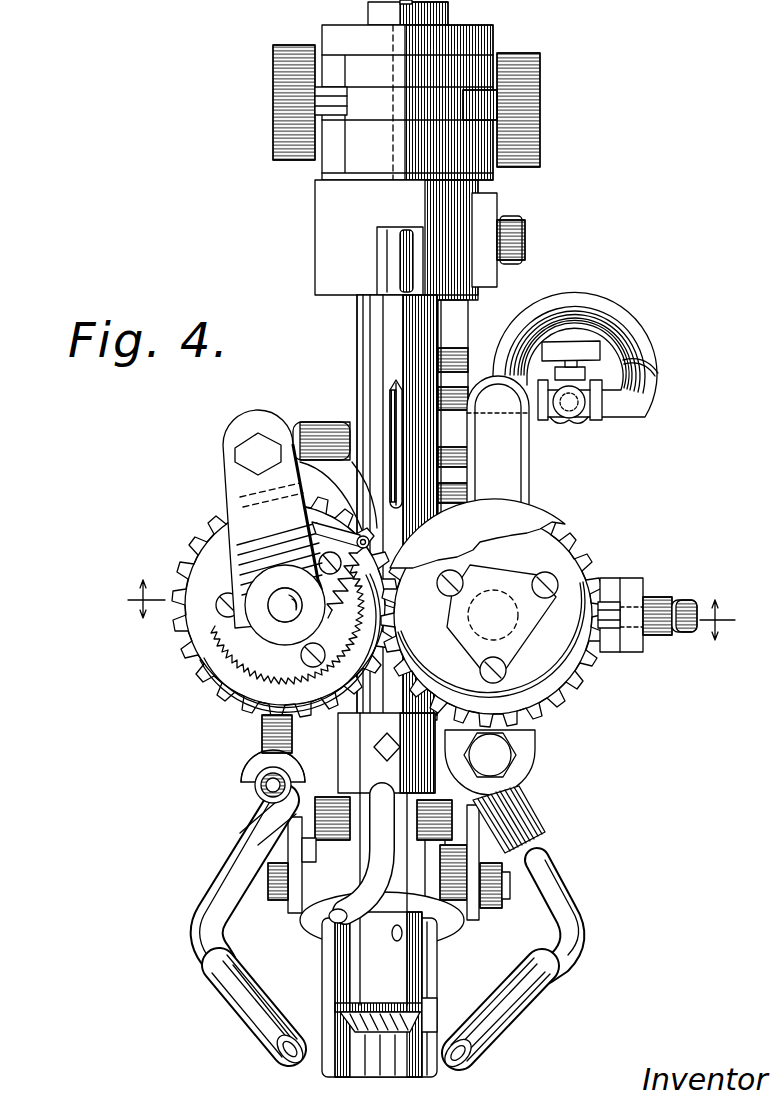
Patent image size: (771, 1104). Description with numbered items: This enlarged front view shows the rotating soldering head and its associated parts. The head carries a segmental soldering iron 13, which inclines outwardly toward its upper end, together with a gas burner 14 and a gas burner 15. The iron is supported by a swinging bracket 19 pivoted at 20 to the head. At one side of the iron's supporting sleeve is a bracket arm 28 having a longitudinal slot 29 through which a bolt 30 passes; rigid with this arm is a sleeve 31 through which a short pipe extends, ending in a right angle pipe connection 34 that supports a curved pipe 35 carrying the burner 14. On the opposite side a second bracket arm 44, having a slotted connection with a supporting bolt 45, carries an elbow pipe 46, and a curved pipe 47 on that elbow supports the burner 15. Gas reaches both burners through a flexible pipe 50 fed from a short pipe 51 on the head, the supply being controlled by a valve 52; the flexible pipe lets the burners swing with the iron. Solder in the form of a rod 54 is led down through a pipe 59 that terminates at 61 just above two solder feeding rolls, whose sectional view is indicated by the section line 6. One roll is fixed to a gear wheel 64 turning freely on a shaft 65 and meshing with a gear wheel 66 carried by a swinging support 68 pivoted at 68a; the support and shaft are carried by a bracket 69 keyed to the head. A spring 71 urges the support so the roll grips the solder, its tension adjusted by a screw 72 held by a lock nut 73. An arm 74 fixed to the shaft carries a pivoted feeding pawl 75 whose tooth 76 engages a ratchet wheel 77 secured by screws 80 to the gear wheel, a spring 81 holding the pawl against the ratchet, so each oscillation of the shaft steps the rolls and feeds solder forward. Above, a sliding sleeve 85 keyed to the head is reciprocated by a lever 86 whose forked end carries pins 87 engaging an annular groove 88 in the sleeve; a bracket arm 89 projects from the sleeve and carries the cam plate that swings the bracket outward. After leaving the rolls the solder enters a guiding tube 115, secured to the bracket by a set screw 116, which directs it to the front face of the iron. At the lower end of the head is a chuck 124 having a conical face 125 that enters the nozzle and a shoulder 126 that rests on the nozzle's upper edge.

The section line 6- 6 is at (433, 610).
The soldering iron 13 is at (385, 1068).
The gas burner 14 is at (258, 1012).
The gas burner 15 is at (528, 997).
The swinging bracket 19 is at (300, 823).
The pivotal support 20 is at (333, 809).
The bracket arm 28 is at (293, 844).
The longitudinal slot 29 is at (330, 918).
The bolt 30 is at (277, 898).
The sleeve 31 is at (258, 772).
The right angle pipe connection 34 is at (266, 786).
The curved pipe 35 is at (205, 893).
The second bracket arm 44 is at (472, 846).
The supporting bolt 45 is at (503, 882).
The elbow pipe 46 is at (532, 798).
The curved pipe 47 is at (570, 908).
The flexible pipe 50 is at (588, 296).
The short pipe 51 is at (462, 392).
The valve 52 is at (577, 418).
The solder rod 54 is at (493, 613).
The pipe 59 is at (398, 437).
The lower end of pipe 61 is at (430, 506).
The gear wheel 64 is at (207, 555).
The shaft 65 is at (262, 622).
The gear wheel 66 is at (553, 550).
The swinging support 68 is at (498, 444).
The pivot 68a is at (496, 742).
The bracket 69 is at (598, 582).
The spring 71 is at (612, 610).
The screw 72 is at (684, 606).
The lock nut 73 is at (656, 599).
The arm 74 is at (240, 498).
The feeding pawl 75 is at (300, 472).
The tooth 76 is at (312, 527).
The ratchet wheel 77 is at (280, 611).
The screws 80 is at (330, 625).
The spring 81 is at (306, 538).
The sliding sleeve 85 is at (330, 231).
The lever 86 is at (272, 112).
The projecting pins 87 is at (333, 103).
The annular groove 88 is at (440, 125).
The bracket arm 89 is at (490, 210).
The guiding tube 115 is at (440, 800).
The set screw 116 is at (386, 754).
The chuck 124 is at (414, 1006).
The conical face 125 is at (378, 1020).
The shoulder 126 is at (428, 1018).